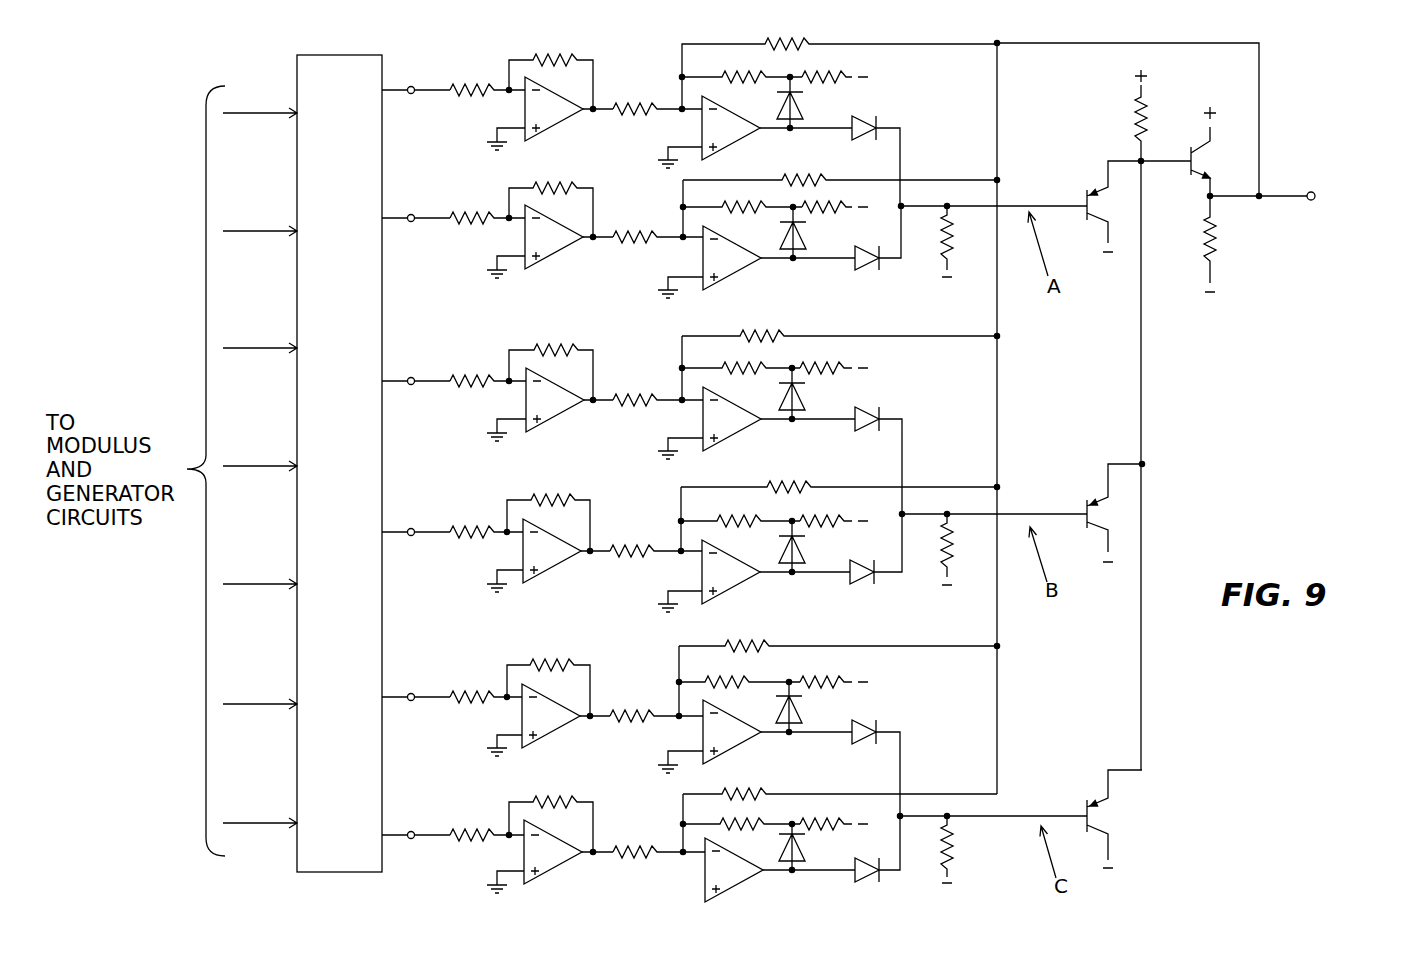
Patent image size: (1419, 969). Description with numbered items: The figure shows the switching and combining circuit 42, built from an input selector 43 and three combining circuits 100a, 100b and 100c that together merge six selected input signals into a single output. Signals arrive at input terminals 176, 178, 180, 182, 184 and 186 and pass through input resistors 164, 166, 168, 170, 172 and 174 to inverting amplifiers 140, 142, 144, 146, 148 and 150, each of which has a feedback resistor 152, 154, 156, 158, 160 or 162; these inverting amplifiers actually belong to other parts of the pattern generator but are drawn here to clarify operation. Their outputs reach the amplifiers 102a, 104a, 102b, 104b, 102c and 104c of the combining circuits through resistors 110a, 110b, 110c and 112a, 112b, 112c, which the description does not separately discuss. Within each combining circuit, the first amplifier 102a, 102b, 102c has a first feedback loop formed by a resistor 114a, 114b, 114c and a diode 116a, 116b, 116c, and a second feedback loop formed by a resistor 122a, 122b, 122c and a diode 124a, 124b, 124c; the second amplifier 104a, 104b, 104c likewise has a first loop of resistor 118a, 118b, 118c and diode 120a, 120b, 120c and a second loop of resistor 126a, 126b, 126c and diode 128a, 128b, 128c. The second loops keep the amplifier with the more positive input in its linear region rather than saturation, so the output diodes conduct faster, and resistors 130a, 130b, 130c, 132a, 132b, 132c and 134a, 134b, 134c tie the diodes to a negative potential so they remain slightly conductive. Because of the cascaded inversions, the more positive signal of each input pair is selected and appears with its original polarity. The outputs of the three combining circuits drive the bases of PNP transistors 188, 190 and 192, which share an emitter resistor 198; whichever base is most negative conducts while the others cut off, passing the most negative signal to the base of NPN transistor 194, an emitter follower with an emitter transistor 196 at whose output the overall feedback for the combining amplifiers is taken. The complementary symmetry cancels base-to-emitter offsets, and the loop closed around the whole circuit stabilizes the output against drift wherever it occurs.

The switching and combining circuit 42 is at (761, 28).
The input selector 43 is at (373, 55).
The combining circuit 100a is at (921, 83).
The combining circuit 100b is at (922, 391).
The combining circuit 100c is at (920, 695).
The amplifier 102a is at (735, 142).
The amplifier 102b is at (739, 434).
The amplifier 102c is at (734, 742).
The amplifier 104a is at (738, 272).
The amplifier 104b is at (735, 582).
The amplifier 104c is at (727, 890).
The resistor 110a is at (619, 103).
The resistor 110b is at (620, 392).
The resistor 110c is at (620, 708).
The resistor 112a is at (620, 231).
The resistor 112b is at (620, 542).
The resistor 112c is at (620, 845).
The resistor 114a is at (808, 44).
The resistor 114b is at (798, 342).
The resistor 114c is at (797, 650).
The diode 116a is at (870, 140).
The diode 116b is at (867, 442).
The diode 116c is at (850, 748).
The resistor 118a is at (840, 160).
The resistor 118b is at (780, 487).
The resistor 118c is at (774, 796).
The diode 120a is at (865, 268).
The diode 120b is at (864, 585).
The diode 120c is at (874, 885).
The resistor 122a is at (724, 82).
The resistor 122b is at (726, 375).
The resistor 122c is at (723, 687).
The diode 124a is at (809, 100).
The diode 124b is at (812, 392).
The diode 124c is at (811, 703).
The resistor 126a is at (724, 211).
The resistor 126b is at (717, 525).
The resistor 126c is at (724, 827).
The diode 128a is at (808, 229).
The diode 128b is at (811, 537).
The diode 128c is at (811, 840).
The resistor 130a is at (952, 232).
The resistor 130b is at (952, 551).
The resistor 130c is at (962, 845).
The resistor 132a is at (847, 77).
The resistor 132b is at (838, 368).
The resistor 132c is at (838, 682).
The resistor 134a is at (840, 207).
The resistor 134b is at (832, 521).
The resistor 134c is at (830, 824).
The inverting amplifier 140 is at (556, 124).
The inverting amplifier 142 is at (552, 252).
The inverting amplifier 144 is at (554, 416).
The inverting amplifier 146 is at (554, 567).
The inverting amplifier 148 is at (554, 731).
The inverting amplifier 150 is at (551, 881).
The feedback resistor 152 is at (549, 57).
The feedback resistor 154 is at (549, 185).
The feedback resistor 156 is at (549, 347).
The feedback resistor 158 is at (549, 498).
The feedback resistor 160 is at (549, 663).
The feedback resistor 162 is at (549, 801).
The input resistor 164 is at (468, 86).
The input resistor 166 is at (469, 214).
The input resistor 168 is at (474, 373).
The input resistor 170 is at (474, 525).
The input resistor 172 is at (468, 688).
The input resistor 174 is at (466, 825).
The input terminal 176 is at (411, 86).
The input terminal 178 is at (411, 214).
The input terminal 180 is at (411, 374).
The input terminal 182 is at (411, 526).
The input terminal 184 is at (411, 689).
The input terminal 186 is at (411, 827).
The PNP transistor 188 is at (1090, 184).
The PNP transistor 190 is at (1076, 494).
The PNP transistor 192 is at (1086, 797).
The NPN transistor 194 is at (1195, 176).
The emitter transistor 196 is at (1229, 245).
The resistor 198 is at (1136, 117).